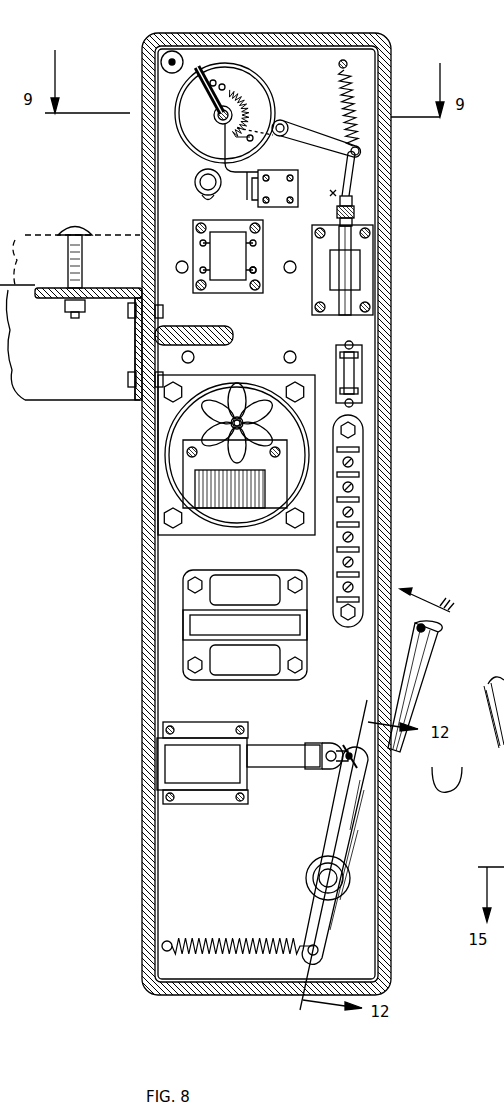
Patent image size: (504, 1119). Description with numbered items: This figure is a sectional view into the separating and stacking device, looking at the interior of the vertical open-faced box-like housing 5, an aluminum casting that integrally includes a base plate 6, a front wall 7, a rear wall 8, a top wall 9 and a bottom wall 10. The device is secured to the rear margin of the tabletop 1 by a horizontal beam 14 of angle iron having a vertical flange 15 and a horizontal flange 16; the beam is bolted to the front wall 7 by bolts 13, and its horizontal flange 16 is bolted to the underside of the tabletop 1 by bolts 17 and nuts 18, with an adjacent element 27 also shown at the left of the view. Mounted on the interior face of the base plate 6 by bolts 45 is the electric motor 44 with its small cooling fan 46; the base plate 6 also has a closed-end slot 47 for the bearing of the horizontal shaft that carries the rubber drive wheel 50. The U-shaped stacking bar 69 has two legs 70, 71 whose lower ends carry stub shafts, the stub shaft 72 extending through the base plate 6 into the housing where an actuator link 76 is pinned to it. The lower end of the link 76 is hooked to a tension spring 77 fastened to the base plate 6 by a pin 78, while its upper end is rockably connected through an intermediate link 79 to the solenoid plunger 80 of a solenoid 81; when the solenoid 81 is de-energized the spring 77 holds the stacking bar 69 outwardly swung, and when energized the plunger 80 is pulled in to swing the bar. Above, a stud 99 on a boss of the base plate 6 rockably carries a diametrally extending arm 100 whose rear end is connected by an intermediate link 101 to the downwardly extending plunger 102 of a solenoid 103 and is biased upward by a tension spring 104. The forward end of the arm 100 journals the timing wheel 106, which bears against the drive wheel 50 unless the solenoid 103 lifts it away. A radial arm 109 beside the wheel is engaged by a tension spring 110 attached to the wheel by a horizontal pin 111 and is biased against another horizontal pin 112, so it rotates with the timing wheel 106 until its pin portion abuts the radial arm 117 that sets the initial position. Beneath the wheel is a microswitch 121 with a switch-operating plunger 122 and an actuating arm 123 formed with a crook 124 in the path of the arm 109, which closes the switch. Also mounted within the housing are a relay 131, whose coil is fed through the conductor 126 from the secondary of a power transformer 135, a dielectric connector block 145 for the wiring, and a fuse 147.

The tabletop 1 is at (40, 235).
The housing 5 is at (392, 427).
The base plate 6 is at (163, 857).
The front wall 7 is at (142, 585).
The rear wall 8 is at (390, 530).
The top wall 9 is at (275, 34).
The bottom wall 10 is at (247, 995).
The bolts 13 is at (128, 312).
The horizontal beam 14 is at (52, 285).
The vertical flange 15 is at (98, 288).
The horizontal flange 16 is at (137, 345).
The bolts 17 is at (80, 225).
The nuts 18 is at (65, 312).
The panel 27 is at (65, 395).
The electric motor 44 is at (192, 453).
The bolts 45 is at (178, 390).
The cooling fan 46 is at (240, 388).
The closed-end slot 47 is at (201, 197).
The rubber drive wheel 50 is at (196, 178).
The stacking bar 69 is at (430, 661).
The leg 70 is at (438, 636).
The leg 71 is at (488, 682).
The stub shaft 72 is at (330, 878).
The actuator link 76 is at (320, 847).
The tension spring 77 is at (250, 942).
The pin 78 is at (162, 946).
The intermediate link 79 is at (352, 773).
The solenoid plunger 80 is at (275, 748).
The solenoid 81 is at (178, 755).
The stud 99 is at (284, 122).
The arm 100 is at (307, 132).
The intermediate link 101 is at (352, 173).
The plunger 102 is at (353, 212).
The solenoid 103 is at (362, 265).
The tension spring 104 is at (352, 93).
The timing wheel 106 is at (190, 98).
The radial arm 109 is at (213, 80).
The tension spring 110 is at (242, 107).
The horizontal pin 111 is at (284, 122).
The horizontal pin 112 is at (222, 84).
The radial arm 117 is at (200, 82).
The microswitch 121 is at (244, 256).
The switch-operating plunger 122 is at (275, 177).
The actuating arm 123 is at (247, 195).
The crook 124 is at (207, 120).
The conductor 126 is at (157, 42).
The relay 131 is at (262, 273).
The power transformer 135 is at (188, 623).
The connector block 145 is at (349, 486).
The fuse 147 is at (353, 380).